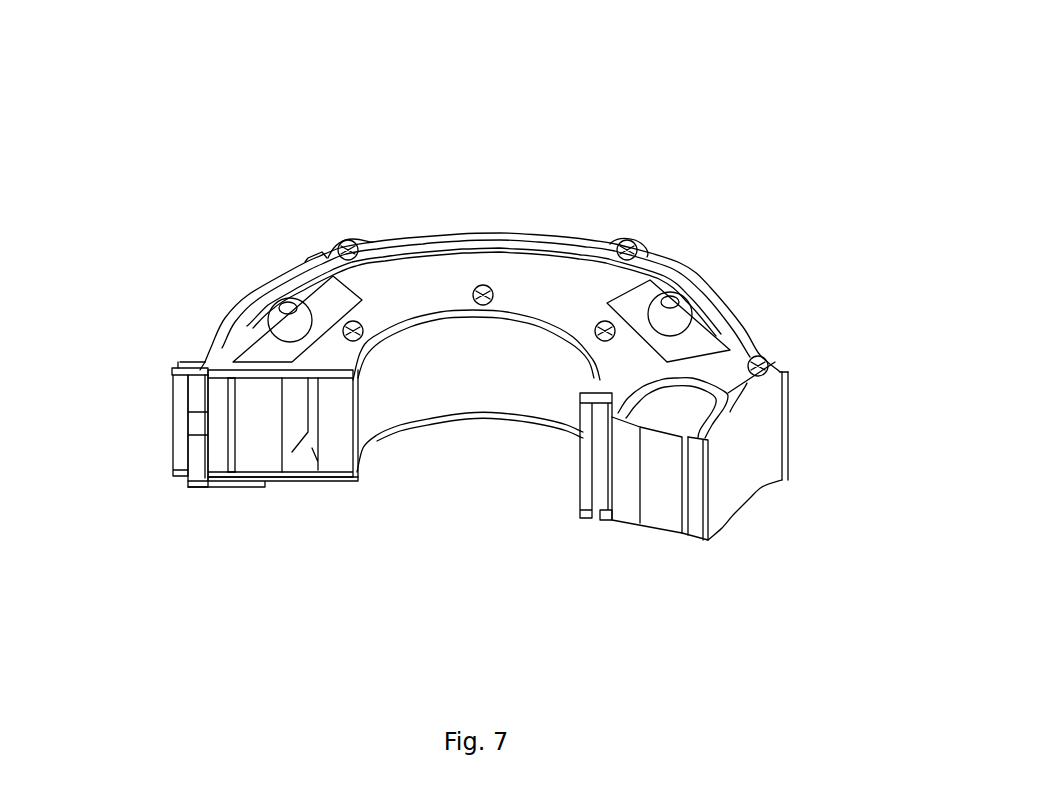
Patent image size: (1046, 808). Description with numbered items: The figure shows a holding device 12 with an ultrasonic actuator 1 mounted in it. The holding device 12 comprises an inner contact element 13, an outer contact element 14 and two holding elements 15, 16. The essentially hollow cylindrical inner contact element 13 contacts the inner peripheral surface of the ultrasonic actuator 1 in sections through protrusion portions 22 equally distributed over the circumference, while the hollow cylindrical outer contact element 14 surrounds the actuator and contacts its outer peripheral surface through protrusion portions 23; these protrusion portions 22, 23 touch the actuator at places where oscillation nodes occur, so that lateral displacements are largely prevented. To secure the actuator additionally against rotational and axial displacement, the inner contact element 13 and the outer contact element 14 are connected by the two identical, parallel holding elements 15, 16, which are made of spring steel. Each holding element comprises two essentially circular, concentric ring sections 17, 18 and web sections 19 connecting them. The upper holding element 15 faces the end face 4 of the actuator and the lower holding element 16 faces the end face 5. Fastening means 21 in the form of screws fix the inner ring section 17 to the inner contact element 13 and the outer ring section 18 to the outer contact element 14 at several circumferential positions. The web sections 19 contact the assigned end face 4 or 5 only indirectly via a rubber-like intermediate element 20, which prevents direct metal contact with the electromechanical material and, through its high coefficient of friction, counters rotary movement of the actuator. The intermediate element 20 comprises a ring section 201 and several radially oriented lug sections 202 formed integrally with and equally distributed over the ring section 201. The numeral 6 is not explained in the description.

The ultrasonic actuator 1 is at (180, 360).
The end face 4 is at (587, 247).
The end face 5 is at (262, 474).
The boss 6 is at (283, 305).
The holding device 12 is at (250, 240).
The inner contact element 13 is at (335, 425).
The outer contact element 14 is at (176, 393).
The holding element 15 is at (571, 298).
The holding element 16 is at (218, 485).
The inner ring section 17 is at (440, 302).
The outer ring section 18 is at (533, 274).
The web sections 19 is at (367, 243).
The intermediate element 20 is at (612, 290).
The fastening means 21 is at (202, 448).
The protrusion portions 22 is at (623, 497).
The protrusion portions 23 is at (478, 258).
The ring section 201 is at (735, 410).
The lug sections 202 is at (628, 246).